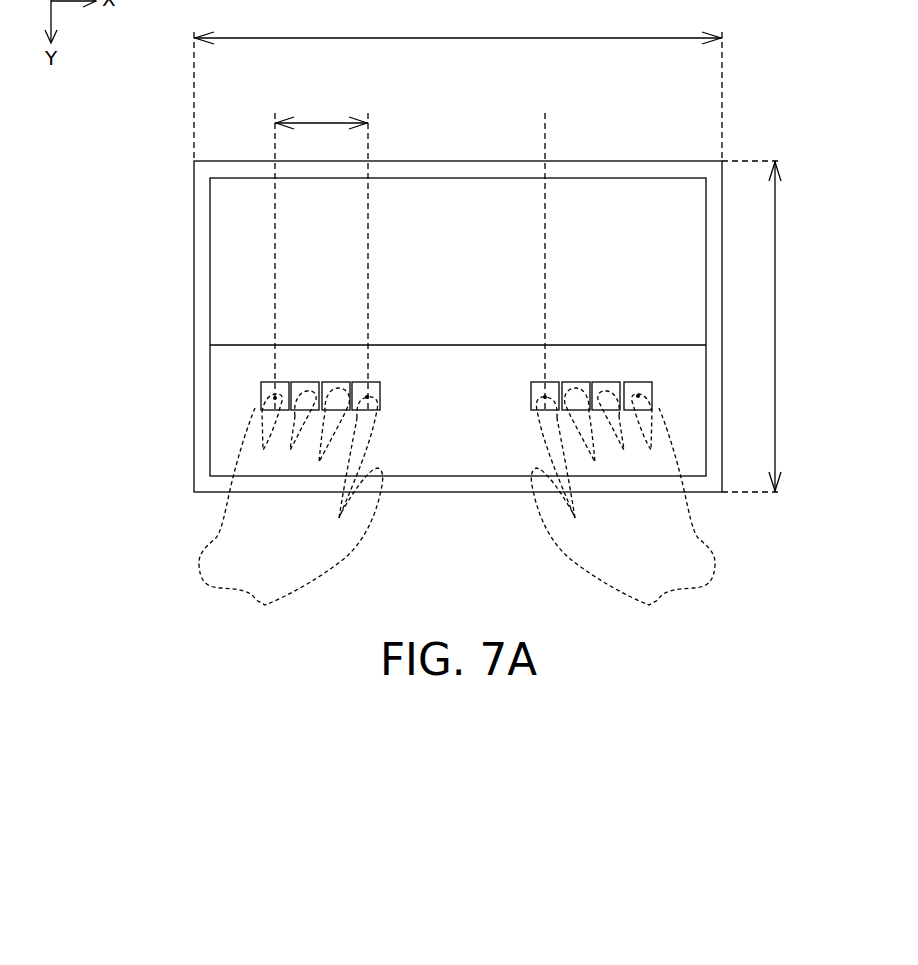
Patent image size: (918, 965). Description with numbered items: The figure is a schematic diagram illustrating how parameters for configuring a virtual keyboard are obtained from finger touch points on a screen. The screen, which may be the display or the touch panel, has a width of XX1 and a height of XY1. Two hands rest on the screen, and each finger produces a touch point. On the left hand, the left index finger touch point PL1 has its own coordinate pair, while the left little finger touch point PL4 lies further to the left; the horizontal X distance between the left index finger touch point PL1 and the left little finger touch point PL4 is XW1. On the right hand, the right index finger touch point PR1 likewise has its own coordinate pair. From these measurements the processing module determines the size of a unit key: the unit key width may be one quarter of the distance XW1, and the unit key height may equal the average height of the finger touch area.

The screen width XX1 is at (458, 25).
The X distance between left index finger touch point and left little finger touch po XW1 is at (321, 110).
The screen height XY1 is at (800, 326).
The left little finger touch point PL4 is at (275, 398).
The left index finger touch point PL1 is at (367, 397).
The right index finger touch point PR1 is at (545, 397).